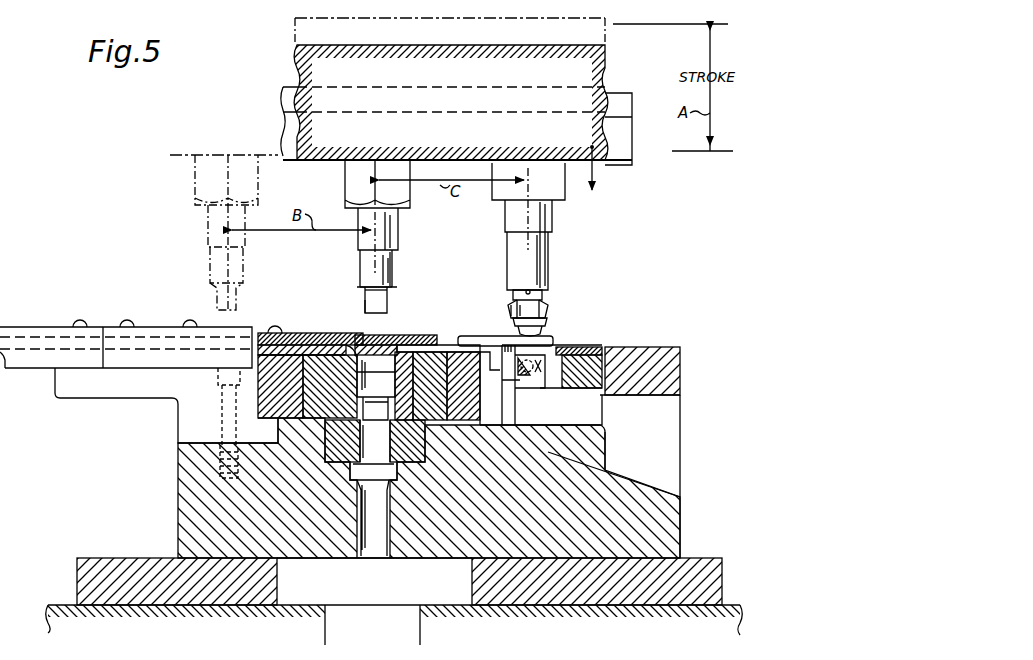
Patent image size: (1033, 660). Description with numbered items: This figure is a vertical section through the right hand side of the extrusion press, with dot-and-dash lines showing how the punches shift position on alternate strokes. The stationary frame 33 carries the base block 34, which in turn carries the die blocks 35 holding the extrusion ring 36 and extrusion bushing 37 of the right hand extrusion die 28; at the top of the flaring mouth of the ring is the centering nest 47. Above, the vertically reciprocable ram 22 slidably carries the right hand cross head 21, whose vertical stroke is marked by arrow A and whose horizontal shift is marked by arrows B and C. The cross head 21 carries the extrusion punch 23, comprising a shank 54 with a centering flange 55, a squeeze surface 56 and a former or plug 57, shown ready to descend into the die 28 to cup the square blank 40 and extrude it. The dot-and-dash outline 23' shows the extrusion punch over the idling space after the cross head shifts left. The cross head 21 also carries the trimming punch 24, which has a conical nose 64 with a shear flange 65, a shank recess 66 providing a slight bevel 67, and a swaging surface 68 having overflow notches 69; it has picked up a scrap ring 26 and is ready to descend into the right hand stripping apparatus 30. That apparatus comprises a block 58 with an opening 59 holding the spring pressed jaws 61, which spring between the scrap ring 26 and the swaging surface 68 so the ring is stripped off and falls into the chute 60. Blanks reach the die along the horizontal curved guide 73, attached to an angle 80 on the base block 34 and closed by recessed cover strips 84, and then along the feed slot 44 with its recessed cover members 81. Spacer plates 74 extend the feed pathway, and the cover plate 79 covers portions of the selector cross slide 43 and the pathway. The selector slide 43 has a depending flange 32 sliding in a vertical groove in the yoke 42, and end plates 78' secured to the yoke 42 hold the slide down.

The ram 22 is at (312, 47).
The right hand cross head 21 is at (286, 132).
The extrusion punch shifted position 23' is at (208, 232).
The extrusion punch 23 is at (393, 236).
The shank 54 is at (398, 262).
The centering flange 55 is at (398, 282).
The squeeze surface 56 is at (396, 293).
The former or plug 57 is at (390, 304).
The trimming punch 24 is at (553, 245).
The overflow notches 69 is at (528, 292).
The swaging surface 68 is at (518, 297).
The shear flange 65 is at (544, 303).
The shank recess 66 is at (512, 300).
The bevel 67 is at (514, 312).
The scrap ring 26 is at (538, 316).
The conical nose 64 is at (518, 330).
The right hand stripping apparatus 30 is at (558, 335).
The feed slot 44 is at (164, 340).
The recessed cover strips 84 is at (44, 330).
The recessed cover members 81 is at (143, 330).
The horizontal curved guide 73 is at (26, 310).
The angle 80 is at (136, 399).
The extrusion bushing 37 is at (258, 409).
The extrusion ring 36 is at (274, 379).
The cover plate 79 is at (296, 332).
The spacer plates 74 is at (272, 336).
The centering nest 47 is at (344, 338).
The right hand extrusion die 28 is at (354, 330).
The square blank 40 is at (380, 339).
The selector cross slide 43 is at (452, 340).
The end plates 78' is at (475, 319).
The depending flange 32 is at (502, 388).
The spring pressed jaws 61 is at (540, 368).
The opening 59 is at (562, 347).
The block 58 is at (598, 347).
The yoke 42 is at (672, 368).
The die blocks 35 is at (272, 388).
The base block 34 is at (188, 509).
The chute 60 is at (610, 472).
The stationary frame 33 is at (554, 611).